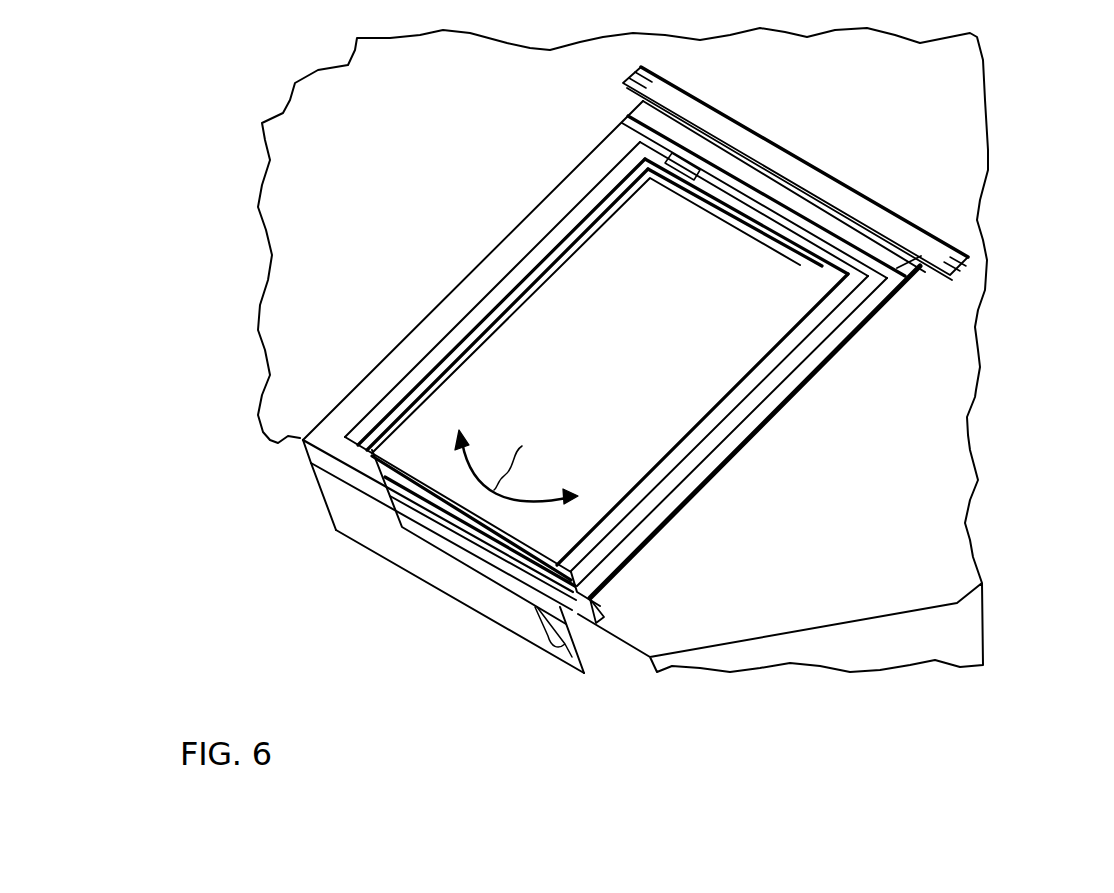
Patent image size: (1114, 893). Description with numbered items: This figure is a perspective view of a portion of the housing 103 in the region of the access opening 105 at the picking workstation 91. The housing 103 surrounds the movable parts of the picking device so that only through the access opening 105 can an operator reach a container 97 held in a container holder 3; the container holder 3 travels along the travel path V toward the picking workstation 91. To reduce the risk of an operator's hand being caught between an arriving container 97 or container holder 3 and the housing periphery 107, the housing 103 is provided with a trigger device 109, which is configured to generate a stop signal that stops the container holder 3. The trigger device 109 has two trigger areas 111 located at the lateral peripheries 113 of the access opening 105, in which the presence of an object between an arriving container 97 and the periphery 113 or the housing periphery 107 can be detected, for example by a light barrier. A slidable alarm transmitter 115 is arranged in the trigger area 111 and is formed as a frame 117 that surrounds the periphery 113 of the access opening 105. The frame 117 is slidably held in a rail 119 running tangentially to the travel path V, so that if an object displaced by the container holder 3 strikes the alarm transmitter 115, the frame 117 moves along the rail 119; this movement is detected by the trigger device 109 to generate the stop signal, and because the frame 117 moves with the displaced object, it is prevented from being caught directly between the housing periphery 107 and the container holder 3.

The container holder 3 is at (537, 350).
The picking workstation 91 is at (414, 631).
The container 97 is at (650, 339).
The housing 103 is at (948, 420).
The access opening 105 is at (595, 412).
The housing periphery 107 is at (532, 350).
The trigger device 109 is at (496, 604).
The trigger area 111 is at (346, 516).
The lateral periphery of the access opening 113 is at (446, 354).
The slidable alarm transmitter 115 is at (840, 439).
The frame 117 is at (935, 295).
The rail 119 is at (955, 254).